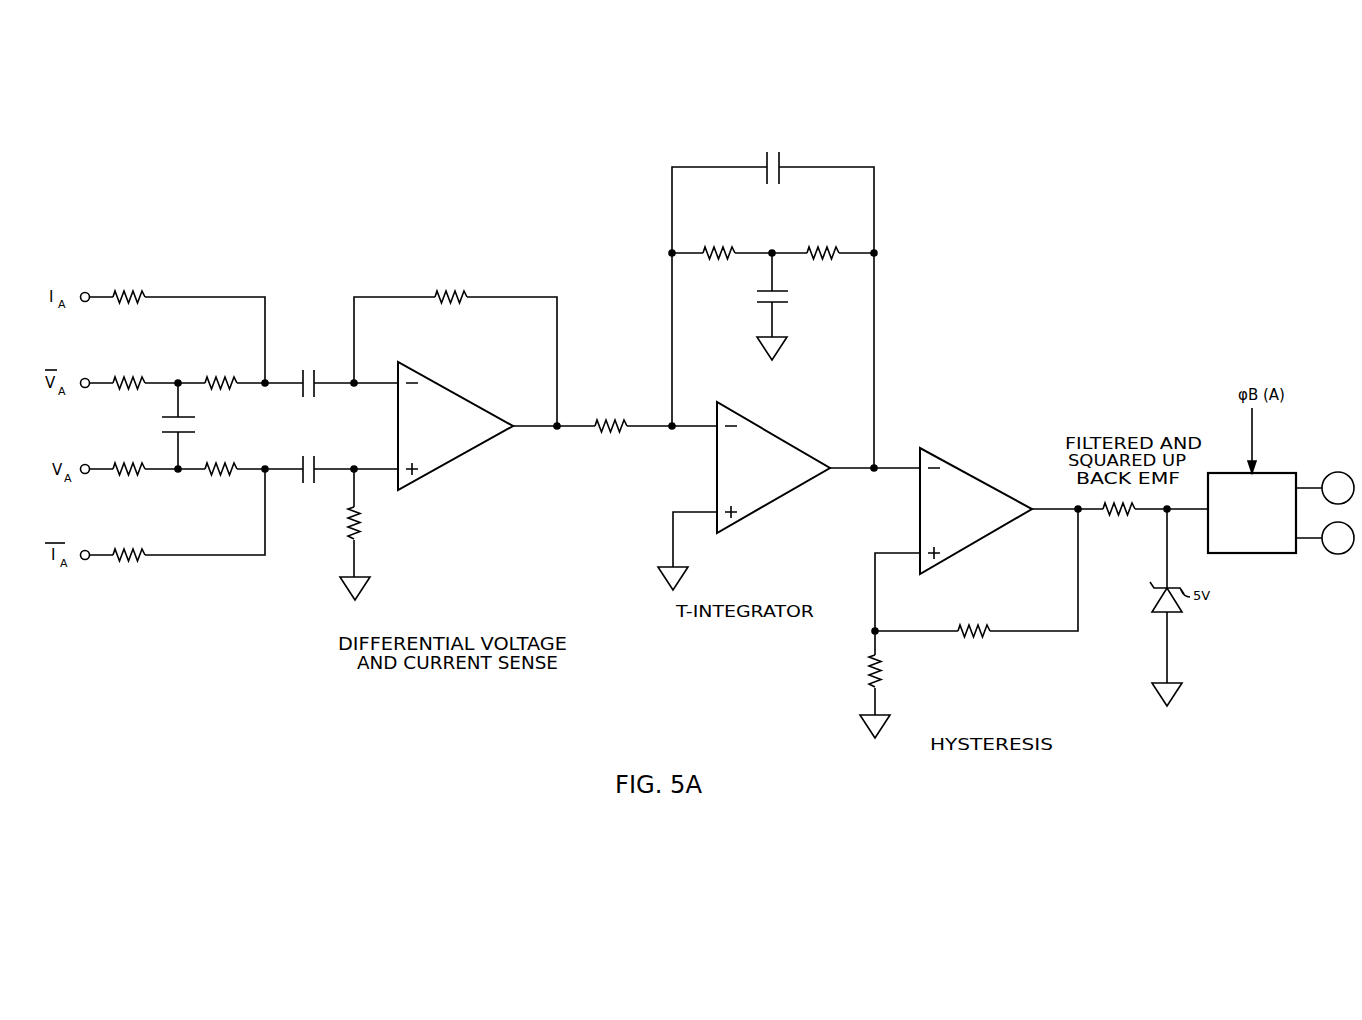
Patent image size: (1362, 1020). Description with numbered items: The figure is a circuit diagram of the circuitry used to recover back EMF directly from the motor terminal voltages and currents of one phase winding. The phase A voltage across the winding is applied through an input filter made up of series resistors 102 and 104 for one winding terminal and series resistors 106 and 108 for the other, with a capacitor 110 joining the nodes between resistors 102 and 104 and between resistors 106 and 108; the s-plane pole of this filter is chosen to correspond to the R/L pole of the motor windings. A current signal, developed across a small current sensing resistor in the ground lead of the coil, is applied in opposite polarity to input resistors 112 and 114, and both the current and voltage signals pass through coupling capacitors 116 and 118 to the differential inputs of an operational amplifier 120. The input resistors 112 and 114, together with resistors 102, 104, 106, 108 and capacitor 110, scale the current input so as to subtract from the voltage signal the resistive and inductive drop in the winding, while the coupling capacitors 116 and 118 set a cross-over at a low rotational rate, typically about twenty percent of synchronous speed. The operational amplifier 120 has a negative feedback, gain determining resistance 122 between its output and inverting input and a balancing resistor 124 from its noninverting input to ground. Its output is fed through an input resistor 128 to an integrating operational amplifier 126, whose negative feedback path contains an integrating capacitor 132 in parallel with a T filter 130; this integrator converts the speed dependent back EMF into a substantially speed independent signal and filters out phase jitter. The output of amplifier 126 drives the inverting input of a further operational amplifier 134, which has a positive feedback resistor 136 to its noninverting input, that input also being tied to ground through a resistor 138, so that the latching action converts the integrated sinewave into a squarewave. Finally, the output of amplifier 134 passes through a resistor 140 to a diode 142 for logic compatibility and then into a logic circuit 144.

The series resistor 102 is at (129, 377).
The series resistor 104 is at (217, 377).
The series resistor 106 is at (129, 477).
The series resistor 108 is at (217, 477).
The capacitor 110 is at (198, 429).
The input resistor 112 is at (129, 290).
The input resistor 114 is at (129, 565).
The coupling capacitor 116 is at (307, 362).
The coupling capacitor 118 is at (307, 450).
The operational amplifier 120 is at (450, 400).
The gain determining resistance 122 is at (454, 292).
The balancing resistor 124 is at (362, 527).
The integrating operational amplifier 126 is at (766, 445).
The input resistor 128 is at (612, 433).
The T filter 130 is at (735, 316).
The integrating capacitor 132 is at (775, 150).
The operational amplifier 134 is at (962, 484).
The positive feedback resistor 136 is at (976, 626).
The resistor 138 is at (888, 676).
The resistor 140 is at (1120, 518).
The diode 142 is at (1183, 610).
The logic circuit 144 is at (1255, 554).